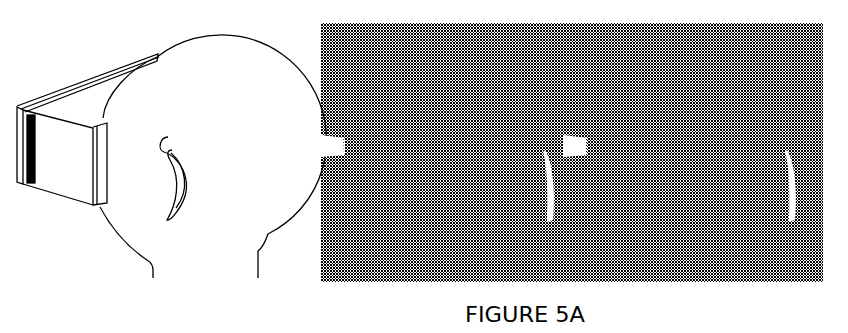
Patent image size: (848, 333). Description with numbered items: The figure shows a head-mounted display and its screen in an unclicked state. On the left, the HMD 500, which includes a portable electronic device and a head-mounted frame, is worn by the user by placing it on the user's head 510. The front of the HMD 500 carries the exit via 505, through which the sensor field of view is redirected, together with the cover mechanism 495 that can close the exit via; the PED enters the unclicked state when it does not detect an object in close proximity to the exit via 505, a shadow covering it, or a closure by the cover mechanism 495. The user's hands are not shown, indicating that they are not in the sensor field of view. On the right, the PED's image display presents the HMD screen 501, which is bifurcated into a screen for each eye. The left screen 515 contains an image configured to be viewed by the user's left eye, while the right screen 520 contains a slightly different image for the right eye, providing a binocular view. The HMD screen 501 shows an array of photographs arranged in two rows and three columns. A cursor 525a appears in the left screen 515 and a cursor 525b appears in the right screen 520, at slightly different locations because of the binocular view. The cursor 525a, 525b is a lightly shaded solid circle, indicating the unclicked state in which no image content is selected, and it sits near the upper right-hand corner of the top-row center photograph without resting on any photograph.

The HMD 500 is at (88, 155).
The user's head 510 is at (218, 48).
The exit via 505 is at (63, 186).
The cover mechanism 495 is at (31, 187).
The HMD screen 501 is at (568, 167).
The left screen 515 is at (437, 206).
The right screen 520 is at (679, 209).
The cursor 525a is at (452, 153).
The cursor 525b is at (694, 153).